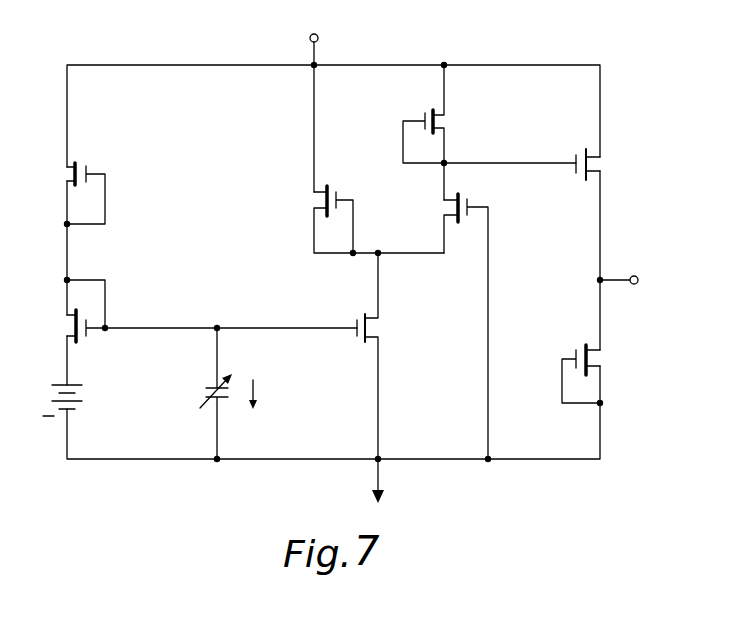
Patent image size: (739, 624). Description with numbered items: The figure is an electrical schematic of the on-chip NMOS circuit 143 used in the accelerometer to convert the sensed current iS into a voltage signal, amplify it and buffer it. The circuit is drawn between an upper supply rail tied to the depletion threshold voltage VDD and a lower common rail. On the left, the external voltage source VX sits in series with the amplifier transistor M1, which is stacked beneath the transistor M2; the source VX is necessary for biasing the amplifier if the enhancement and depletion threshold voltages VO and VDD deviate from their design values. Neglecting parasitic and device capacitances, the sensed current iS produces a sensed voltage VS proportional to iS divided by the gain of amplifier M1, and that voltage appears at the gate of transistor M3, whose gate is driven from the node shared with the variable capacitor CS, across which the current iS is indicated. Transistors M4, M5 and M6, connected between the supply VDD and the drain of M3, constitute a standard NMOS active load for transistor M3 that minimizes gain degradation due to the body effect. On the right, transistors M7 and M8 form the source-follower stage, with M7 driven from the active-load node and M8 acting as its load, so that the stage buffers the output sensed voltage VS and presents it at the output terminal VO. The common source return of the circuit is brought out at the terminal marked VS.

The NMOS circuit 143 is at (104, 54).
The amplifier transistor M1 is at (195, 311).
The transistor M2 is at (67, 195).
The transistor M3 is at (385, 357).
The active load transistor M4 is at (359, 221).
The active load transistor M5 is at (449, 328).
The active load transistor M6 is at (489, 131).
The transistor M7 is at (605, 168).
The transistor M8 is at (598, 375).
The capacitor CS is at (200, 395).
The external voltage source VX is at (46, 389).
The depletion threshold voltage supply VDD is at (320, 101).
The enhancement threshold voltage output VO is at (632, 288).
The sensed voltage VS is at (392, 487).
The sensed current iS is at (263, 395).